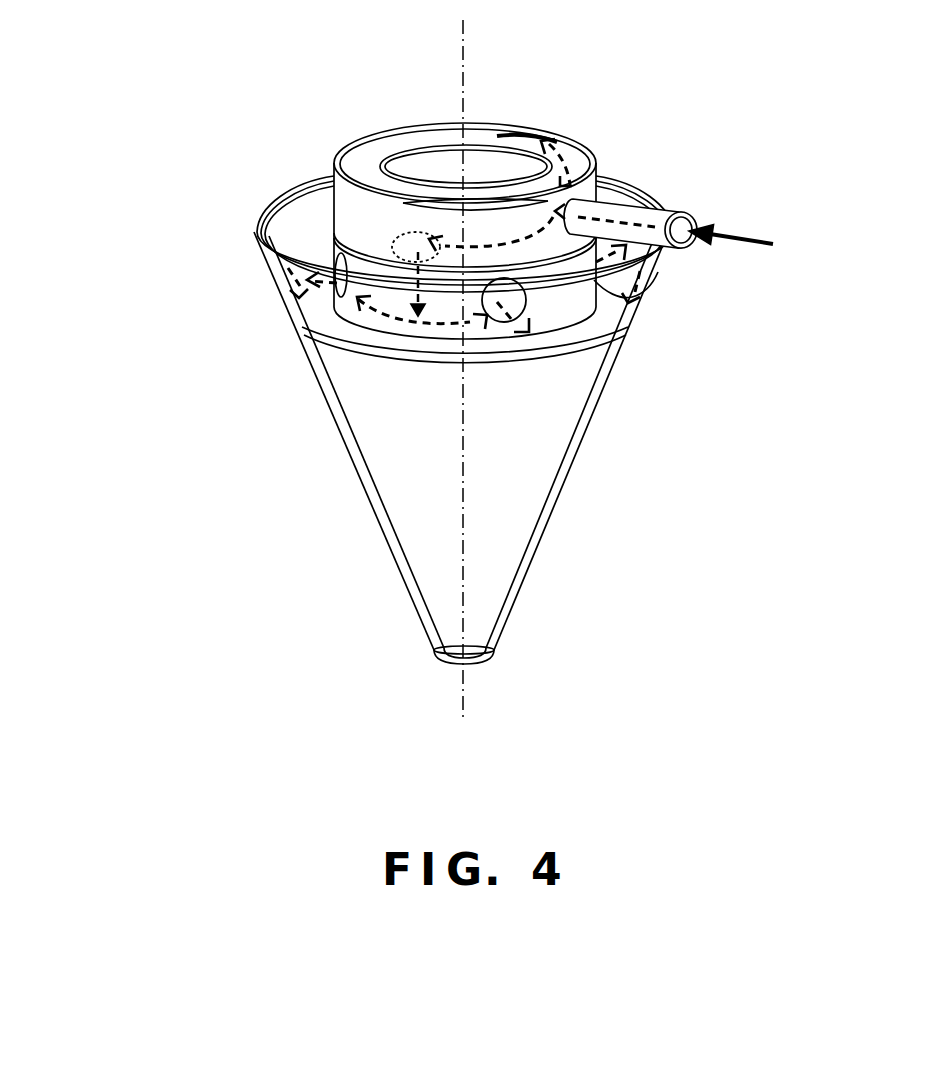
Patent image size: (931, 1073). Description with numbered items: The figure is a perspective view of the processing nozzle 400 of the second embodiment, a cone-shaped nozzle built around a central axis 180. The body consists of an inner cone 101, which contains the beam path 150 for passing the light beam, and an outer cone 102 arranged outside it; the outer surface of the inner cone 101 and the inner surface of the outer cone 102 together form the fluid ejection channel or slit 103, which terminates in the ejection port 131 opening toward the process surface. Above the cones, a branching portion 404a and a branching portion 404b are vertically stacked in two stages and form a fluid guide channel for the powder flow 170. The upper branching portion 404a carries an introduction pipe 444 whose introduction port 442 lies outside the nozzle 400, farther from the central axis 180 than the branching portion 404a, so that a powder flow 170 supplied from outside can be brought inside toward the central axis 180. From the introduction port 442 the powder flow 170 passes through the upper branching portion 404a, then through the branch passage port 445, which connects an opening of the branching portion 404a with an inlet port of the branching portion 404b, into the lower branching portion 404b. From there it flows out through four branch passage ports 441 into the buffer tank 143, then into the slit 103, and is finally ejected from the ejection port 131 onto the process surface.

The processing nozzle 400 is at (415, 364).
The central axis 180 is at (460, 44).
The beam path 150 is at (487, 140).
The branching portion 404a is at (393, 238).
The branching portion 404b is at (633, 300).
The powder flow 170 is at (421, 246).
The introduction pipe 444 is at (660, 208).
The introduction port 442 is at (692, 214).
The branch passage port 445 is at (330, 210).
The buffer tank 143 is at (318, 228).
The branch passage ports 441 is at (527, 297).
The inner cone 101 is at (435, 441).
The fluid ejection channel (slit) 103 is at (375, 489).
The outer cone 102 is at (380, 523).
The ejection port 131 is at (442, 660).